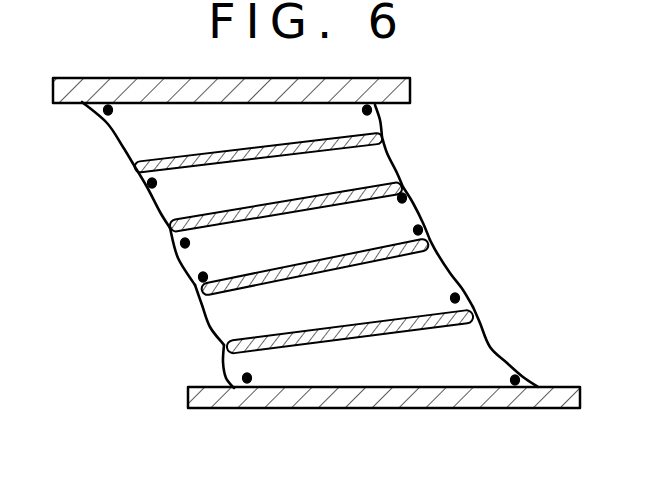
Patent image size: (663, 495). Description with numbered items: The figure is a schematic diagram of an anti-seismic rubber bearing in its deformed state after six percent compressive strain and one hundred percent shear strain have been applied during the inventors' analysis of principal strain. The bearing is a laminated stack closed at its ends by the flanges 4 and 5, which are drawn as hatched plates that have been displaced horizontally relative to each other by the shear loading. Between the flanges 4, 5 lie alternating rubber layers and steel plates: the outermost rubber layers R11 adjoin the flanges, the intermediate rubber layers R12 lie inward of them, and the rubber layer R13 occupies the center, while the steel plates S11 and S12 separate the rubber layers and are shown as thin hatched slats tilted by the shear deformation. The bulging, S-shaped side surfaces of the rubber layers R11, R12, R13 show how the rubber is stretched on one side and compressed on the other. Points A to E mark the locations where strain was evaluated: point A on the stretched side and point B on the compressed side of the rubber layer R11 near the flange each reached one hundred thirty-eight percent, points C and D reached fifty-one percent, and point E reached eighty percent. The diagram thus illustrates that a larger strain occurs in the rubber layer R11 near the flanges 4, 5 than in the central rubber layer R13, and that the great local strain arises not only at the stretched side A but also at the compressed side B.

The flange 4 is at (360, 87).
The flange 5 is at (273, 409).
The point A is at (103, 113).
The point B is at (380, 111).
The point C is at (172, 247).
The point D is at (187, 283).
The point E is at (143, 185).
The steel plate S11 is at (225, 352).
The steel plate S12 is at (197, 299).
The rubber layer R11 is at (380, 126).
The rubber layer R12 is at (380, 169).
The rubber layer R13 is at (405, 217).